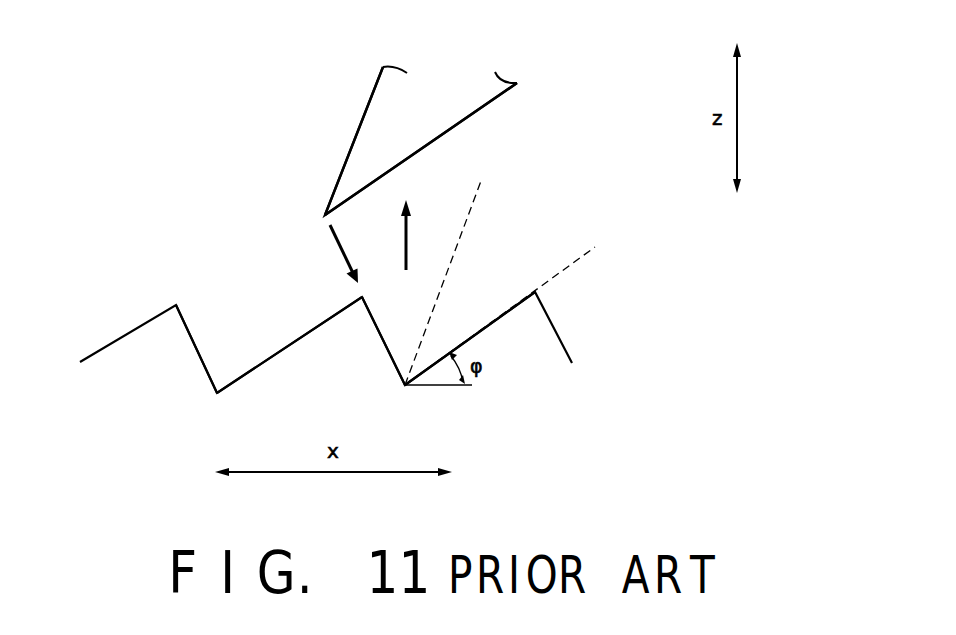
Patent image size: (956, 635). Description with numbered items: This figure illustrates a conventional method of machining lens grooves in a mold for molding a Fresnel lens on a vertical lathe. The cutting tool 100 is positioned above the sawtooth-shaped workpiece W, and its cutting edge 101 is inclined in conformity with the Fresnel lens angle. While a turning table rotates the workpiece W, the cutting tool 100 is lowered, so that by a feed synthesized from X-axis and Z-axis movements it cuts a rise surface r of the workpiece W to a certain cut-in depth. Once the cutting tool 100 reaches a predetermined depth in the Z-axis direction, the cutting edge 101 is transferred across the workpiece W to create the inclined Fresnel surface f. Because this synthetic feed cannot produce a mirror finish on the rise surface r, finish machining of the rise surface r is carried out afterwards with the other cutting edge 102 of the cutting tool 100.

The cutting tool 100 is at (472, 98).
The cutting edge 101 is at (440, 137).
The cutting edge 102 is at (363, 110).
The workpiece W is at (94, 300).
The rise surface r is at (192, 332).
The Fresnel surface f is at (307, 330).